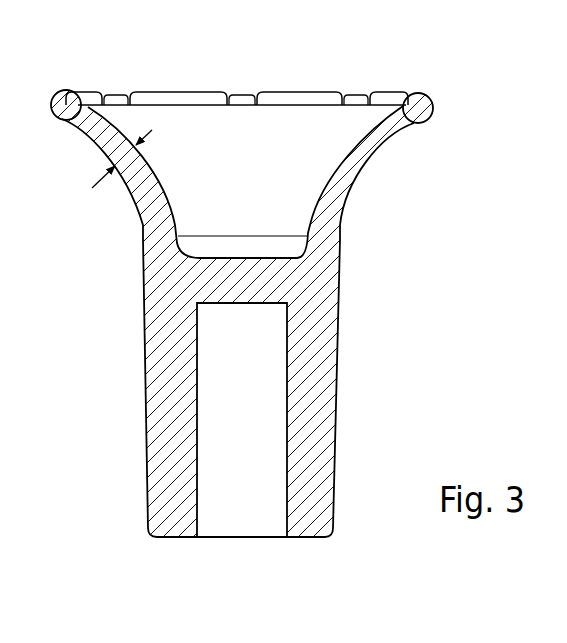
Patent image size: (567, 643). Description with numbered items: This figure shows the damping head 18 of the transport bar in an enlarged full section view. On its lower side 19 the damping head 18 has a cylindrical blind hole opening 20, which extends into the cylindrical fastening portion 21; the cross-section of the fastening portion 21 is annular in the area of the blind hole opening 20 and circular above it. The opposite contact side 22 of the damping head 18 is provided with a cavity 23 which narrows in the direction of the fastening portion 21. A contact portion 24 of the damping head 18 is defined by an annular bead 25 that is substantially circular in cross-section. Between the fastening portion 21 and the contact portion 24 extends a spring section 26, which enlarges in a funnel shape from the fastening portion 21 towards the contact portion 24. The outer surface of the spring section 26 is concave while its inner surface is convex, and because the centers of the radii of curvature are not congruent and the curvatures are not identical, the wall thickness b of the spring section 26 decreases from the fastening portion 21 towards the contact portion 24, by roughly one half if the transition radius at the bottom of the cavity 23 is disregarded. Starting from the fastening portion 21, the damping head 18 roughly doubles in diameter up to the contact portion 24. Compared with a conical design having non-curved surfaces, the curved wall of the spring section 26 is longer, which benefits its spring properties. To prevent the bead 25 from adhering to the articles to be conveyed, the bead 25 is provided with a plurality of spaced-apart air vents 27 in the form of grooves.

The damping head 18 is at (392, 242).
The lower side 19 is at (172, 539).
The blind hole opening 20 is at (264, 522).
The fastening portion 21 is at (345, 358).
The contact side 22 is at (173, 92).
The cavity 23 is at (267, 153).
The contact portion 24 is at (436, 106).
The annular bead 25 is at (56, 91).
The spring section 26 is at (366, 168).
The air vents 27 is at (112, 94).
The wall thickness b is at (92, 188).